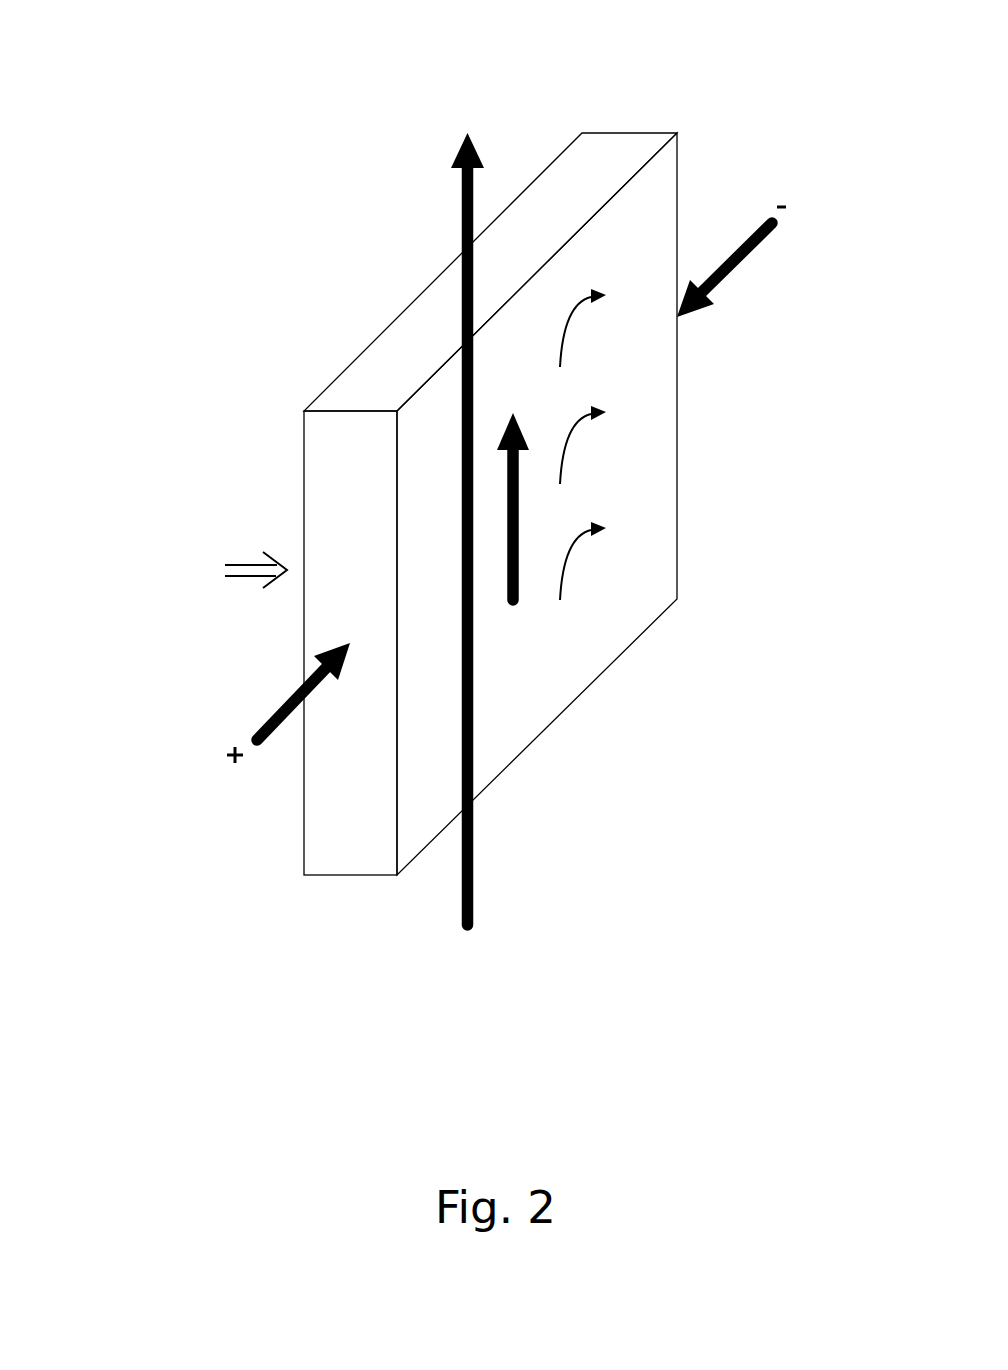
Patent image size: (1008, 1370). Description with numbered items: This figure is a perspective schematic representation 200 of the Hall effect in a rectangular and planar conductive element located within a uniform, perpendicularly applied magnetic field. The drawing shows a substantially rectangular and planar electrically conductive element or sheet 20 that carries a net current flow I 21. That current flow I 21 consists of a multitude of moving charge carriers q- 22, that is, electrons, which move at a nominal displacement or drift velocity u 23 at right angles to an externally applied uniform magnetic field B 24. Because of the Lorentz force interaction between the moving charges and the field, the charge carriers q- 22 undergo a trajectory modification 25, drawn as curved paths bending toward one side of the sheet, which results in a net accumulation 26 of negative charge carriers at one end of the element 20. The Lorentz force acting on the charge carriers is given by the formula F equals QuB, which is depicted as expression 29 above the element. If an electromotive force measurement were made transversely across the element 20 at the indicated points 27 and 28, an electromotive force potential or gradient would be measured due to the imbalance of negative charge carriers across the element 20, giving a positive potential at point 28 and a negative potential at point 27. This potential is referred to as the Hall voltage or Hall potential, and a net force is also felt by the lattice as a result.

The Hall effect sensor arrangement 200 is at (455, 493).
The electrically conductive element or sheet 20 is at (536, 504).
The net current flow "I" 21 is at (521, 915).
The moving charge carriers "q-" 22 is at (590, 684).
The displacement (or drift) velocity "u" 23 is at (608, 568).
The externally applied uniform magnetic field "B" 24 is at (207, 533).
The trajectory modification 25 is at (504, 510).
The net accumulation 26 is at (708, 386).
The point 27 is at (780, 262).
The point 28 is at (247, 703).
The expression 29 is at (536, 39).